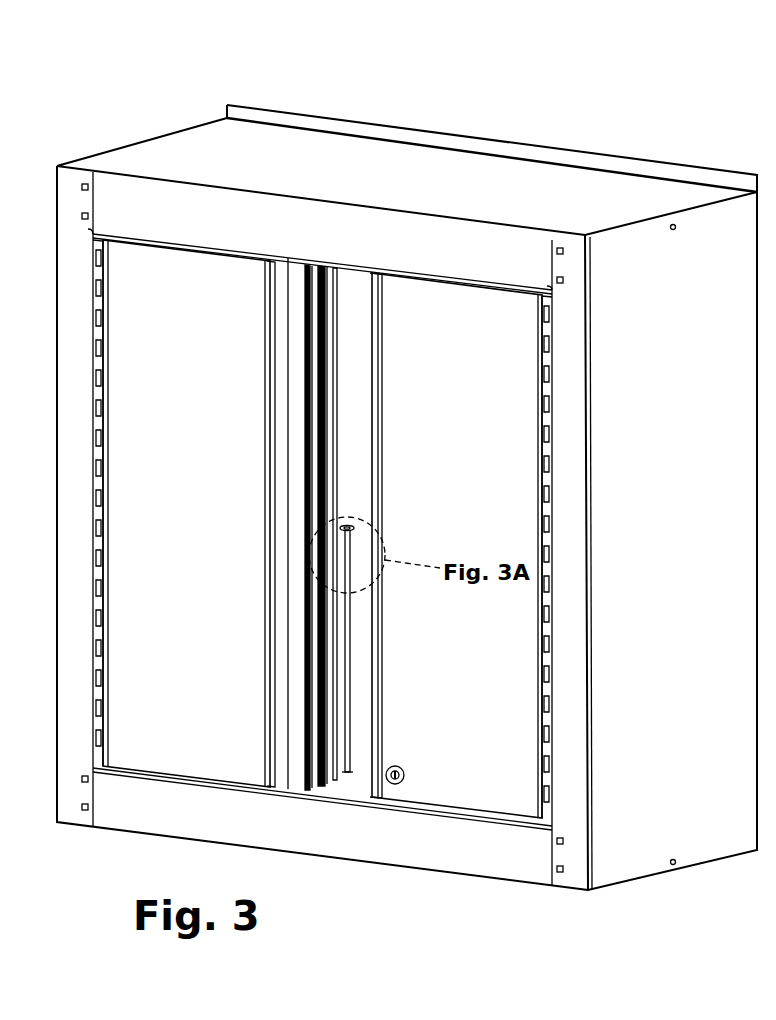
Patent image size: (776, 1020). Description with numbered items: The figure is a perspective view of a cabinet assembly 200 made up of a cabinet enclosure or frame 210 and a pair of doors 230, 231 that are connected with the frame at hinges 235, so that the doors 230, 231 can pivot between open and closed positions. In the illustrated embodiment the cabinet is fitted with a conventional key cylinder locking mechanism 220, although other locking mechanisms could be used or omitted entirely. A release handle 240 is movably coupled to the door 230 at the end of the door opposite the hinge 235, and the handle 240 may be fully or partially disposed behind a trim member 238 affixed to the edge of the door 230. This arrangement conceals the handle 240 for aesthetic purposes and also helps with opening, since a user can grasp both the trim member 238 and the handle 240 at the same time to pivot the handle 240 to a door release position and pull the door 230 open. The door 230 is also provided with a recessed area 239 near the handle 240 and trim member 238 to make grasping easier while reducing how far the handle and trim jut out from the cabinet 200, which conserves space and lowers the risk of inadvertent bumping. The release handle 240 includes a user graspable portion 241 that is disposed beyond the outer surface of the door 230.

The cabinet assembly 200 is at (110, 128).
The cabinet frame 210 is at (570, 665).
The key cylinder locking mechanism 220 is at (390, 786).
The door 230 is at (460, 772).
The door 231 is at (228, 745).
The hinge 235 is at (83, 700).
The trim member 238 is at (330, 767).
The recessed area 239 is at (300, 355).
The release handle 240 is at (356, 548).
The user graspable portion 241 is at (350, 578).